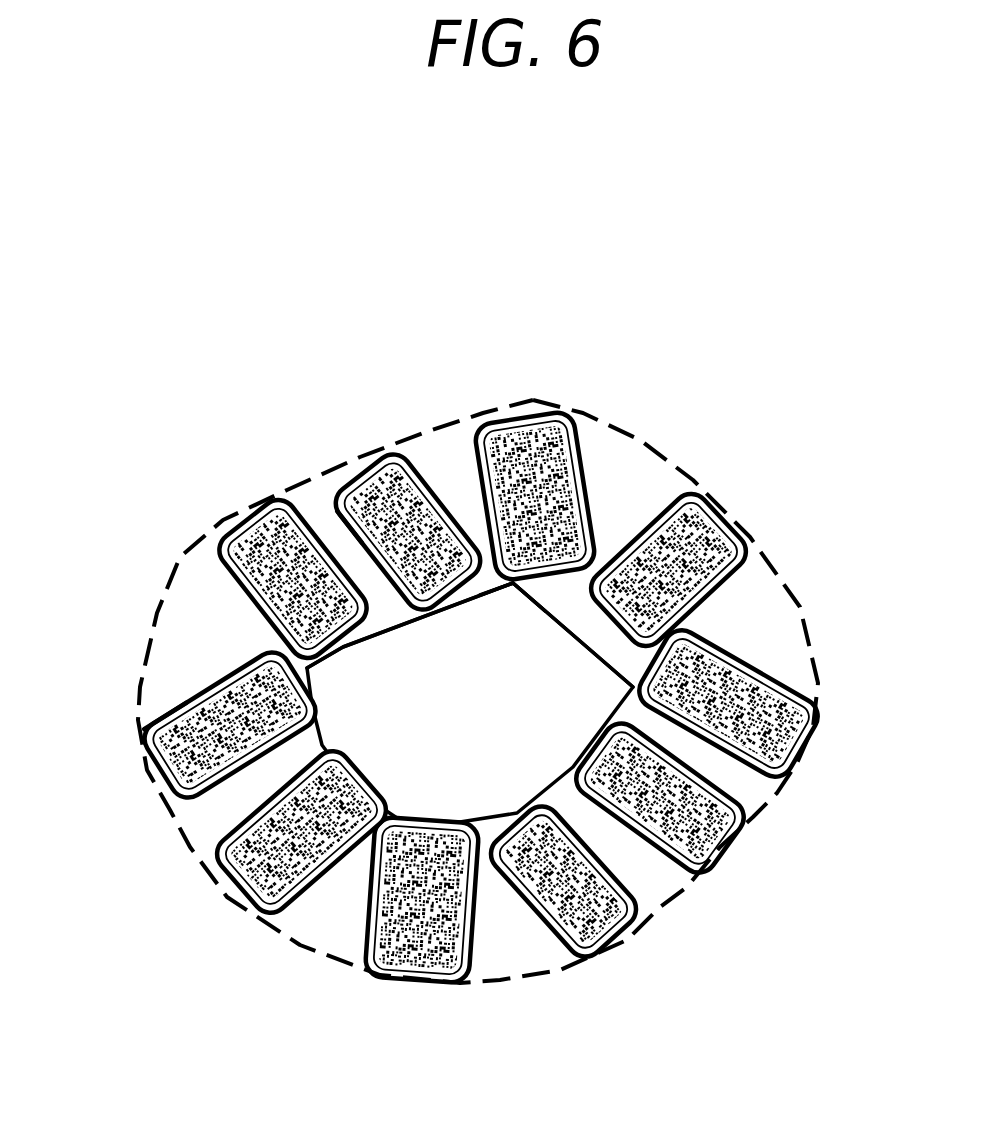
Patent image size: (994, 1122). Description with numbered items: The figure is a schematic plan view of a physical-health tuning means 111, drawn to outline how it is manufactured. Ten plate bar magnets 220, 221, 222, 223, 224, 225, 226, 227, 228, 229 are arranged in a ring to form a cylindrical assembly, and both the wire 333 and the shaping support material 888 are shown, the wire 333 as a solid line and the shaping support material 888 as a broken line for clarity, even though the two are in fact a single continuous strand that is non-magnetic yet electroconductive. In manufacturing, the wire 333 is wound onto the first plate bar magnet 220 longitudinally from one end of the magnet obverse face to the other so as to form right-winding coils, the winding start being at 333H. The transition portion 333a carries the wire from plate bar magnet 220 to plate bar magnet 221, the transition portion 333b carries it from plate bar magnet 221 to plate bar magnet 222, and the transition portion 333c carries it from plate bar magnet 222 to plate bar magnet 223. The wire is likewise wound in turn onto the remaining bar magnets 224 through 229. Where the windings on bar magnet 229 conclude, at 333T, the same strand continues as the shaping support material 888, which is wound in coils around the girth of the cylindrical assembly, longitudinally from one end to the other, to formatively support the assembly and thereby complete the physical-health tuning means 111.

The physical-health tuning means 111 is at (660, 405).
The plate bar magnet 220 is at (255, 510).
The plate bar magnet 221 is at (372, 452).
The plate bar magnet 222 is at (522, 412).
The plate bar magnet 223 is at (725, 503).
The plate bar magnet 224 is at (750, 653).
The plate bar magnet 225 is at (723, 853).
The plate bar magnet 226 is at (623, 940).
The plate bar magnet 227 is at (420, 987).
The plate bar magnet 228 is at (262, 912).
The plate bar magnet 229 is at (220, 673).
The wire 333 is at (588, 470).
The winding start 333H is at (330, 523).
The winding conclusion 333T is at (163, 720).
The transition portion 333a is at (390, 637).
The transition portion 333b is at (495, 590).
The transition portion 333c is at (550, 603).
The shaping support material 888 is at (430, 415).